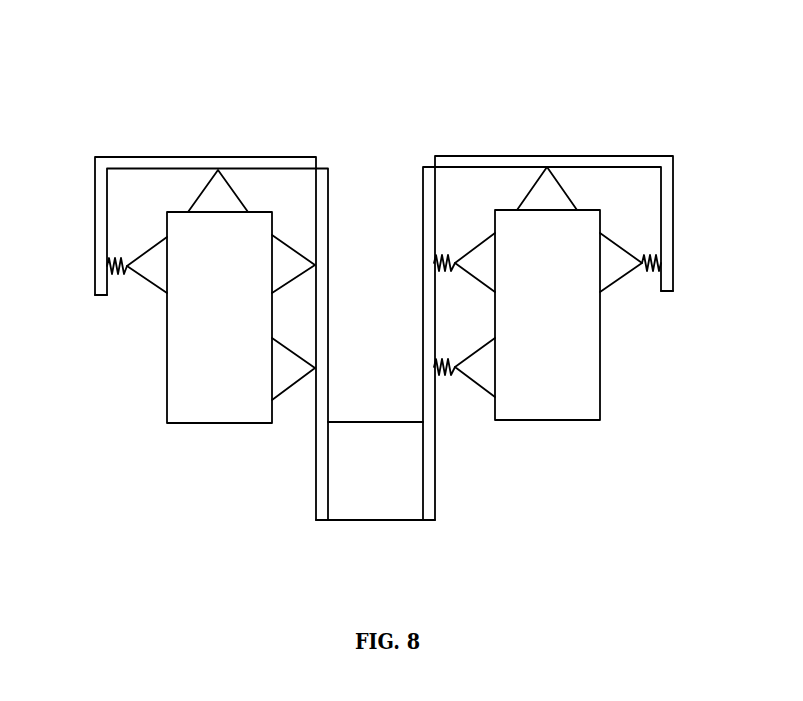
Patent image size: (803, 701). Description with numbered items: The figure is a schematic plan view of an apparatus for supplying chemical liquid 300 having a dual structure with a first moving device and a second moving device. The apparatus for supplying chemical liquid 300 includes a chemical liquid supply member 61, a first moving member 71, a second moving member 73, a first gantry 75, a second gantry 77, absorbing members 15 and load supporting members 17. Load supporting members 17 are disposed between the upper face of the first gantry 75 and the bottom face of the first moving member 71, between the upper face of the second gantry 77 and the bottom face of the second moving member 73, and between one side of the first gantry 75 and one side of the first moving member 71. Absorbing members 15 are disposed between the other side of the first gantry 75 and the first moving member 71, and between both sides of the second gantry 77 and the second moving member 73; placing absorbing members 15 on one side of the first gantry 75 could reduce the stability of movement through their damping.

The apparatus for supplying chemical liquid 300 is at (390, 41).
The first moving member 71 is at (77, 148).
The second moving member 73 is at (690, 143).
The chemical liquid supply member 61 is at (377, 507).
The first gantry 75 is at (219, 408).
The second gantry 77 is at (548, 408).
The absorbing member 15 is at (153, 253).
The load supporting member 17 is at (200, 188).